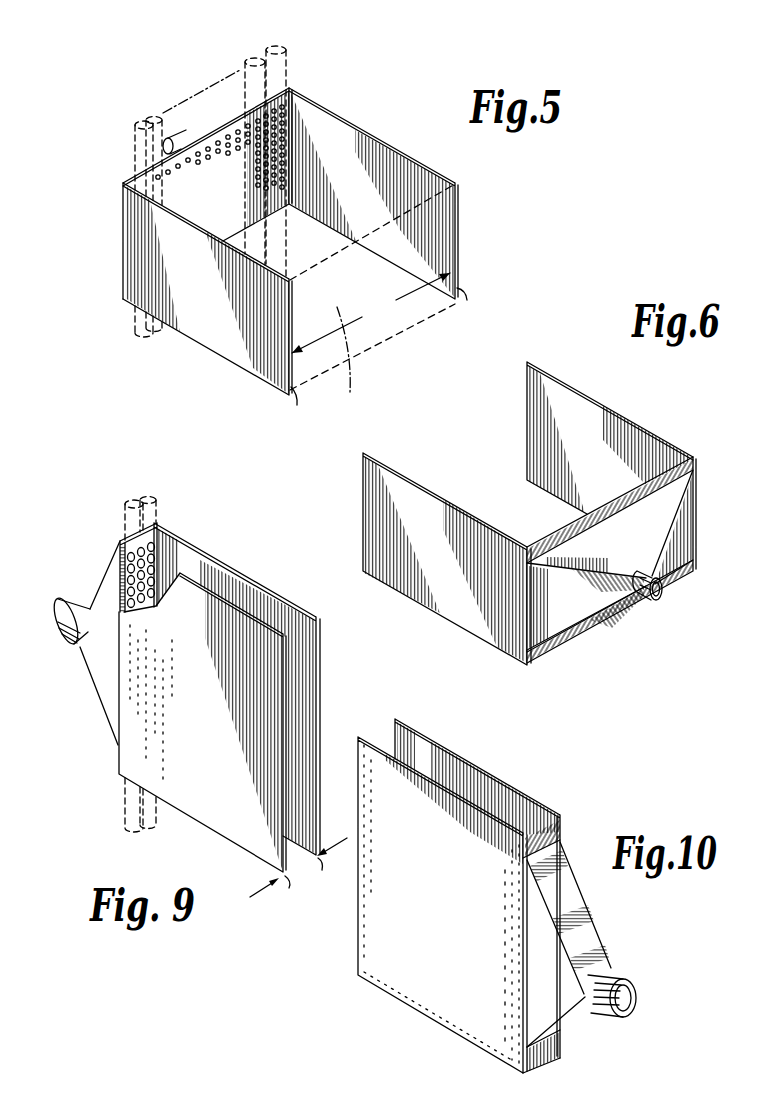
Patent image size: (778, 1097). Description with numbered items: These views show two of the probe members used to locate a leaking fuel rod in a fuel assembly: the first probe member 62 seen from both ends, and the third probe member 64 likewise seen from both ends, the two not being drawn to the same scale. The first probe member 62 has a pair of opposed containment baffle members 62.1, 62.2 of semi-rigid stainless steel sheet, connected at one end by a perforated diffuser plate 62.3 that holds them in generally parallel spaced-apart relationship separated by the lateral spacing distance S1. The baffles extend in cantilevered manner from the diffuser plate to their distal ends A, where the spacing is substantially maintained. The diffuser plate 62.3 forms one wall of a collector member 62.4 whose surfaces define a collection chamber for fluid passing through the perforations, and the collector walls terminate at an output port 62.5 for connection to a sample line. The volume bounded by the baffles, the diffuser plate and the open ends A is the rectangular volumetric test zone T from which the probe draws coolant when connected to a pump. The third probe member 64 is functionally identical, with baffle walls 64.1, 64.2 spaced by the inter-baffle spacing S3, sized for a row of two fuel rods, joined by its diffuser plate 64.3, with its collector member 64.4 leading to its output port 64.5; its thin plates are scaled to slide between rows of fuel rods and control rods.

In FIG. 5, the first probe member 62 is at (354, 116).
In FIG. 6, the first probe member 62 is at (605, 392).
In FIG. 5, the containment baffle member 62.1 is at (391, 166).
In FIG. 6, the containment baffle member 62.1 is at (373, 487).
In FIG. 5, the containment baffle member 62.2 is at (203, 317).
In FIG. 6, the containment baffle member 62.2 is at (643, 432).
In FIG. 5, the diffuser plate 62.3 is at (227, 133).
In FIG. 6, the diffuser plate 62.3 is at (683, 466).
In FIG. 6, the collector member 62.4 is at (680, 552).
In FIG. 5, the output port 62.5 is at (178, 140).
In FIG. 6, the output port 62.5 is at (663, 591).
In FIG. 9, the third probe member 64 is at (215, 846).
In FIG. 9, the baffle wall 64.1 is at (269, 592).
In FIG. 10, the baffle wall 64.1 is at (450, 891).
In FIG. 9, the baffle wall 64.2 is at (153, 697).
In FIG. 10, the baffle wall 64.2 is at (508, 800).
In FIG. 9, the diffuser plate 64.3 is at (125, 541).
In FIG. 10, the diffuser plate 64.3 is at (547, 838).
In FIG. 10, the collector member 64.4 is at (587, 943).
In FIG. 9, the output port 64.5 is at (52, 641).
In FIG. 10, the output port 64.5 is at (660, 981).
In FIG. 5, the lateral spacing distance S1 is at (371, 313).
In FIG. 9, the inter-baffle spacing S3 is at (250, 900).
In FIG. 5, the distal end A is at (384, 357).
In FIG. 9, the distal end A is at (312, 872).
In FIG. 5, the volumetric test zone T is at (347, 362).